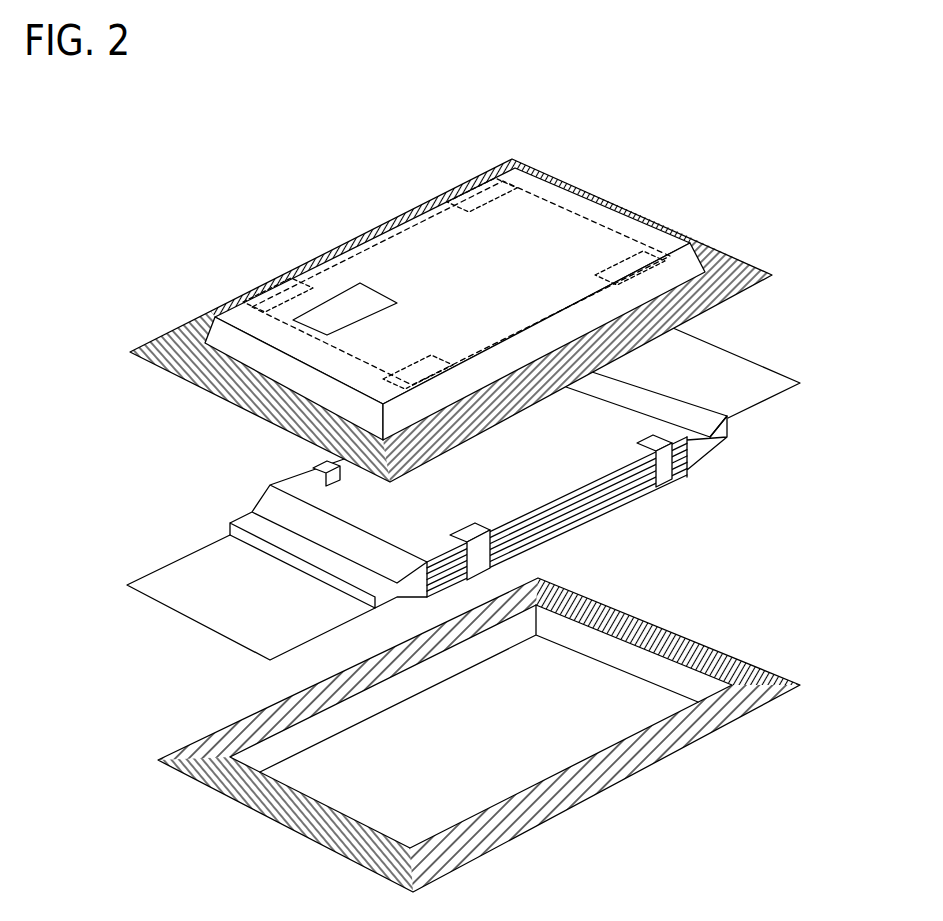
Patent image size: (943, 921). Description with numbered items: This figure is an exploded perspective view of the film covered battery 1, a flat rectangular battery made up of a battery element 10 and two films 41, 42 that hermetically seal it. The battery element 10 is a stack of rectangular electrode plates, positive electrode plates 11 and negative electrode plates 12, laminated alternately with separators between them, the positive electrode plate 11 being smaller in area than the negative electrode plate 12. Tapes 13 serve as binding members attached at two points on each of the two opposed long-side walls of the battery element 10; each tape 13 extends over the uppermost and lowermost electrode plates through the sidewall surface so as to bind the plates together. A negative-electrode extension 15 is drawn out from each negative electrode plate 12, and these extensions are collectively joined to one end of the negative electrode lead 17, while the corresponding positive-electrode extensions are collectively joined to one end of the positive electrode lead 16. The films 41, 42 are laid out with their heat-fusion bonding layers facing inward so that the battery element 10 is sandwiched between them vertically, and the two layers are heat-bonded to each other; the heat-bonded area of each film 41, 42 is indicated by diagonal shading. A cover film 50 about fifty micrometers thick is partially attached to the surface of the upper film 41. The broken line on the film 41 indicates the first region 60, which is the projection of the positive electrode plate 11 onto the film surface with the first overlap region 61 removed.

The film covered battery 1 is at (679, 208).
The battery element 10 is at (673, 485).
The positive electrode plate 11 is at (633, 493).
The negative electrode plate 12 is at (607, 512).
The tape 13 is at (323, 467).
The negative-electrode extension 15 is at (693, 413).
The positive electrode lead 16 is at (165, 577).
The negative electrode lead 17 is at (772, 377).
The film 41 is at (748, 268).
The film 42 is at (747, 715).
The cover film 50 is at (355, 303).
The first region 60 is at (534, 190).
The first overlap region 61 is at (430, 360).